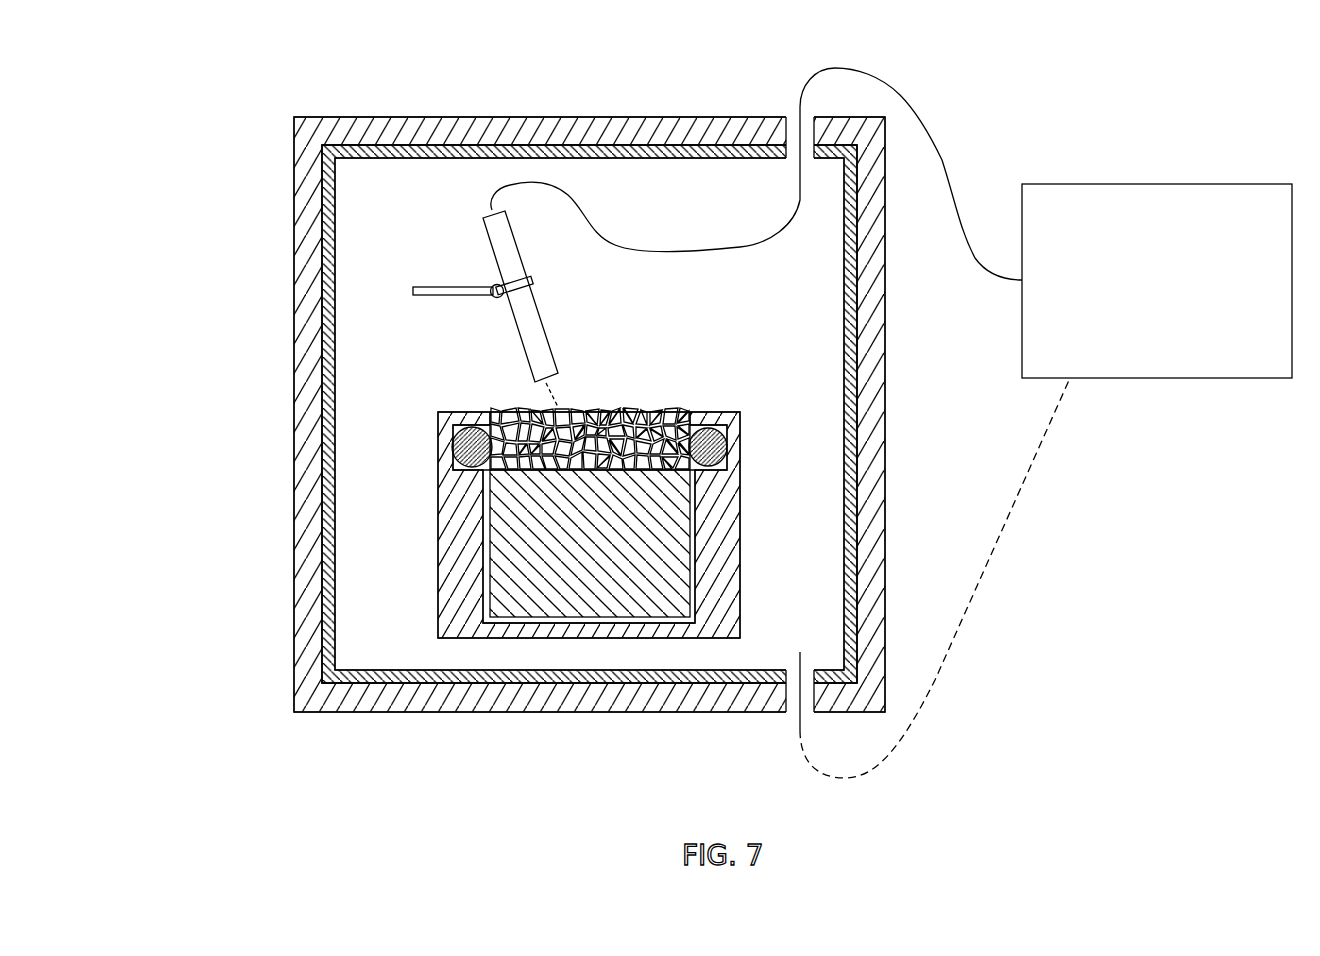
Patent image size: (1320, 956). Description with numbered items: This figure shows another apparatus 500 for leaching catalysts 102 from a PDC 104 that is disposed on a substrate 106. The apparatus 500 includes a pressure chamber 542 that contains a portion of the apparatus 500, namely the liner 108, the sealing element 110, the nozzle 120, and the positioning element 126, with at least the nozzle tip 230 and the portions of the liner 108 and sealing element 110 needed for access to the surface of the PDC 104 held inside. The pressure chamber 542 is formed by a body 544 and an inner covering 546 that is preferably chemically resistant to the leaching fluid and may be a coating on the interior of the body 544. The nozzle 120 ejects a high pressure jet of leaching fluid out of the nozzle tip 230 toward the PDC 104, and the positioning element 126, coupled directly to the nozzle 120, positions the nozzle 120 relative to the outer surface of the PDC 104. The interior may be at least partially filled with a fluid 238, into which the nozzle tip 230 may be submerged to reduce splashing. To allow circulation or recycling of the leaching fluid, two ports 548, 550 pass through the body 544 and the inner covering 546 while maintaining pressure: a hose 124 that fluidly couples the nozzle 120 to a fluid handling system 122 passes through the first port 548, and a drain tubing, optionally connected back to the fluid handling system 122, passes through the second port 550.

The apparatus 500 is at (251, 117).
The pressure chamber 542 is at (251, 457).
The body 544 is at (305, 567).
The inner covering 546 is at (327, 617).
The first port 548 is at (787, 118).
The second port 550 is at (790, 712).
The hose 124 is at (920, 110).
The fluid handling system 122 is at (1175, 295).
The nozzle 120 is at (545, 328).
The positioning element 126 is at (447, 298).
The nozzle tip 230 is at (543, 383).
The catalyst 102 is at (633, 437).
The PDC 104 is at (613, 435).
The substrate 106 is at (613, 575).
The liner 108 is at (742, 448).
The sealing element 110 is at (711, 476).
The fluid 238 is at (813, 568).